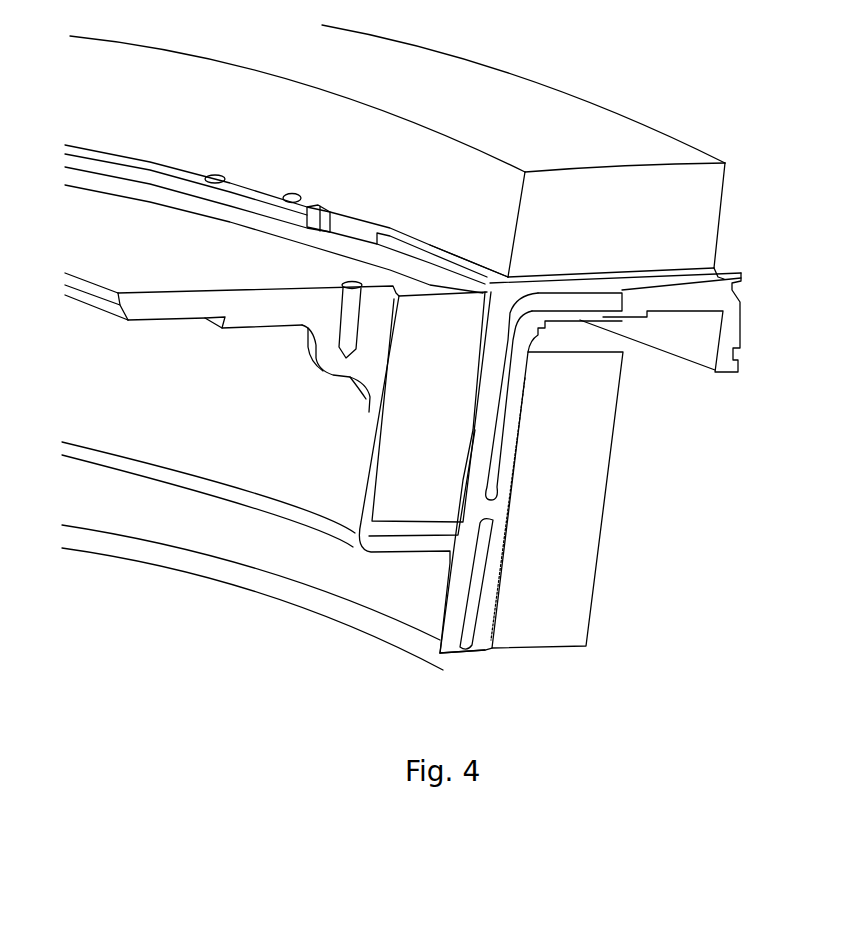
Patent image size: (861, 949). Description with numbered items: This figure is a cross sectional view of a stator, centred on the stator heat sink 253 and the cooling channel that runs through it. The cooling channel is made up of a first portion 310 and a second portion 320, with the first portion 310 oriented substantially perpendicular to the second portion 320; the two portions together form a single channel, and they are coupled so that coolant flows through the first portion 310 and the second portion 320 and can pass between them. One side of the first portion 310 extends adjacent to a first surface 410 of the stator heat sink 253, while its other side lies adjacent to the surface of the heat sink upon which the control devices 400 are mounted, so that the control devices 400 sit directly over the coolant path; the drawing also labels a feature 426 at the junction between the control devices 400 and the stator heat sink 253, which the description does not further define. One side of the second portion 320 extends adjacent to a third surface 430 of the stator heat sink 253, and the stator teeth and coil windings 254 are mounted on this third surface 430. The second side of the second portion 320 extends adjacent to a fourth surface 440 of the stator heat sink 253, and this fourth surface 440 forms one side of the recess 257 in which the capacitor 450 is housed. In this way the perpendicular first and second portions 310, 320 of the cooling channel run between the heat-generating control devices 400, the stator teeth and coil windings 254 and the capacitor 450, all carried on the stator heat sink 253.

The stator heat sink 253 is at (720, 278).
The stator teeth and coil windings 254 is at (584, 612).
The recess 257 is at (398, 530).
The first portion 310 is at (612, 302).
The second portion 320 is at (470, 645).
The control devices 400 is at (687, 143).
The first surface 410 is at (608, 310).
The corner 426 is at (718, 277).
The third surface 430 is at (483, 647).
The fourth surface 440 is at (489, 289).
The capacitor 450 is at (390, 507).